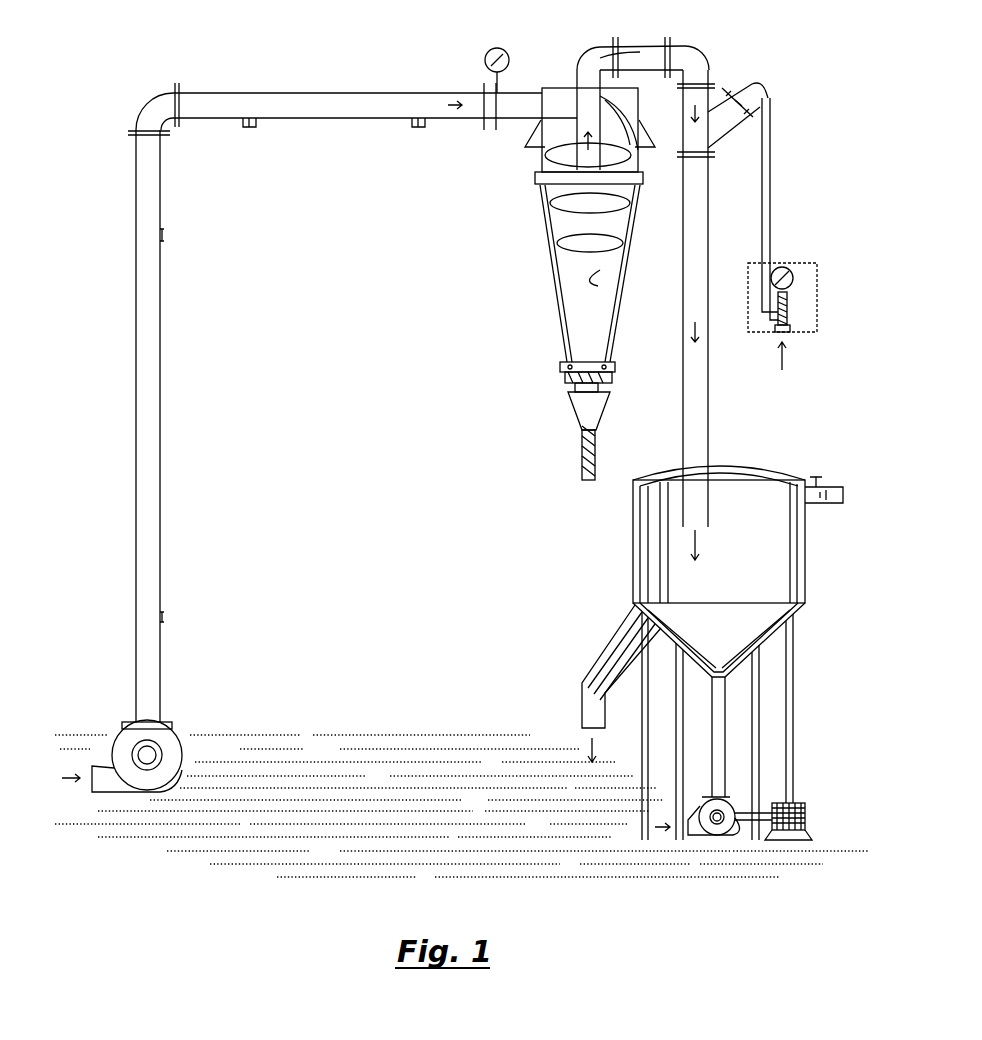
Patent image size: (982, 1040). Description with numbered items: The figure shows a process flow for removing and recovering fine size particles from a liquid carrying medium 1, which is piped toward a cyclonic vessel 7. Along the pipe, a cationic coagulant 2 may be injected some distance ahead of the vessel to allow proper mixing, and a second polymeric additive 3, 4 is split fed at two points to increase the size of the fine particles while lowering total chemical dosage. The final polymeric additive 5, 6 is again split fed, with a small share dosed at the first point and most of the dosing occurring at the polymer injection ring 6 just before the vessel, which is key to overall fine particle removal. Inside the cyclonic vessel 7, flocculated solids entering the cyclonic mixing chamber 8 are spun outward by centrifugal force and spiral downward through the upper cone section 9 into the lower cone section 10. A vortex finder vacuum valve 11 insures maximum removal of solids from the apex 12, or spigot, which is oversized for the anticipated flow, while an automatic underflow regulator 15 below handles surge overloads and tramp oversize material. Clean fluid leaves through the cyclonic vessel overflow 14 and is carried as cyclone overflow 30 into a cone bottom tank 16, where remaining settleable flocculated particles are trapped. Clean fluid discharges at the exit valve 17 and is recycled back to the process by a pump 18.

The liquid carrying medium 1 is at (150, 689).
The cationic coagulant 2 is at (165, 618).
The second polymeric additive 3 is at (165, 236).
The second polymeric additive 4 is at (250, 128).
The final polymeric additive 5 is at (419, 128).
The polymer injection ring 6 is at (487, 97).
The cyclonic vessel 7 is at (566, 202).
The cyclonic mixing chamber 8 is at (552, 88).
The upper cone section 9 is at (630, 215).
The lower cone section 10 is at (570, 304).
The vortex finder vacuum valve 11 is at (788, 333).
The apex 12 is at (560, 367).
The cyclonic vessel overflow 14 is at (690, 72).
The automatic underflow regulator 15 is at (575, 413).
The cone bottom tank 16 is at (633, 557).
The exit valve 17 is at (818, 500).
The pump 18 is at (798, 806).
The cyclone overflow 30 is at (708, 438).